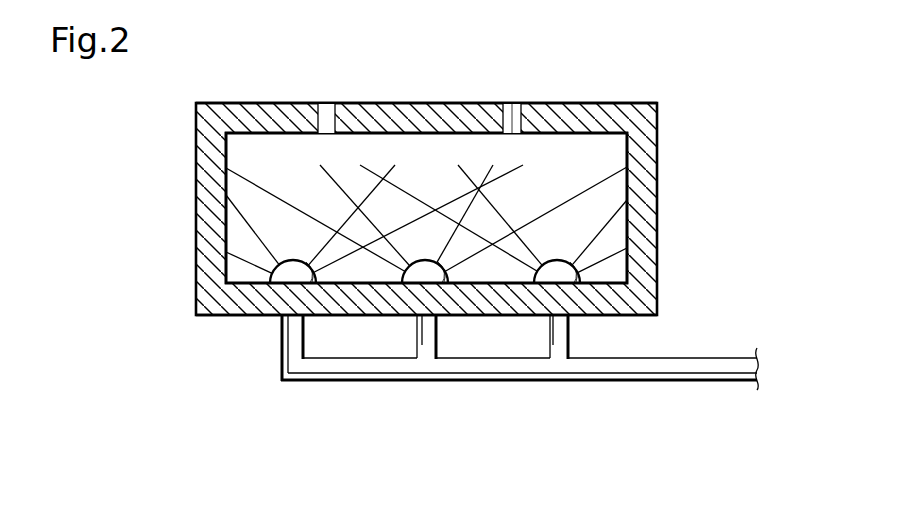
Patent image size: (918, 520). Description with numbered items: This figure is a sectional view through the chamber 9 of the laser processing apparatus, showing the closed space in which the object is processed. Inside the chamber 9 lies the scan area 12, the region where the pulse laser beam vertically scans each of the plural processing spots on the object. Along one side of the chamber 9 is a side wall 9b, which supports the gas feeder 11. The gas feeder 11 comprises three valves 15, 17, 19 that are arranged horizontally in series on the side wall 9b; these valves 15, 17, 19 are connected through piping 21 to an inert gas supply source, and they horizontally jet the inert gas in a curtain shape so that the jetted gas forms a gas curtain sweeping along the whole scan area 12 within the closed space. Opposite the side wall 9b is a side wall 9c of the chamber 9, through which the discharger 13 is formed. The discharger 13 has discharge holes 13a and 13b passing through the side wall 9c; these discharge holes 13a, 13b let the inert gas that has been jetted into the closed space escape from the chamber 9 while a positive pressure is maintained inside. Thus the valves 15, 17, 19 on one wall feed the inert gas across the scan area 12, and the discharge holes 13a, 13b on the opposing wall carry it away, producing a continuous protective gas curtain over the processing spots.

The chamber 9 is at (660, 132).
The side wall 9b is at (252, 316).
The side wall 9c is at (580, 103).
The gas feeder 11 is at (452, 380).
The scan area 12 is at (430, 175).
The discharger 13 is at (516, 103).
The discharge hole 13a is at (325, 103).
The discharge hole 13b is at (509, 103).
The valve 15 is at (303, 284).
The valve 17 is at (436, 284).
The valve 19 is at (567, 284).
The piping 21 is at (527, 394).